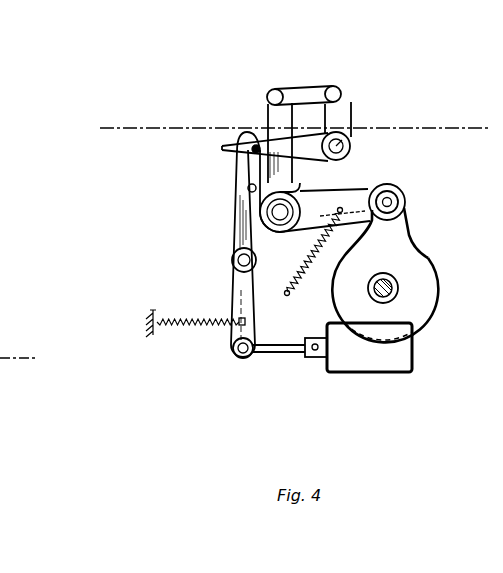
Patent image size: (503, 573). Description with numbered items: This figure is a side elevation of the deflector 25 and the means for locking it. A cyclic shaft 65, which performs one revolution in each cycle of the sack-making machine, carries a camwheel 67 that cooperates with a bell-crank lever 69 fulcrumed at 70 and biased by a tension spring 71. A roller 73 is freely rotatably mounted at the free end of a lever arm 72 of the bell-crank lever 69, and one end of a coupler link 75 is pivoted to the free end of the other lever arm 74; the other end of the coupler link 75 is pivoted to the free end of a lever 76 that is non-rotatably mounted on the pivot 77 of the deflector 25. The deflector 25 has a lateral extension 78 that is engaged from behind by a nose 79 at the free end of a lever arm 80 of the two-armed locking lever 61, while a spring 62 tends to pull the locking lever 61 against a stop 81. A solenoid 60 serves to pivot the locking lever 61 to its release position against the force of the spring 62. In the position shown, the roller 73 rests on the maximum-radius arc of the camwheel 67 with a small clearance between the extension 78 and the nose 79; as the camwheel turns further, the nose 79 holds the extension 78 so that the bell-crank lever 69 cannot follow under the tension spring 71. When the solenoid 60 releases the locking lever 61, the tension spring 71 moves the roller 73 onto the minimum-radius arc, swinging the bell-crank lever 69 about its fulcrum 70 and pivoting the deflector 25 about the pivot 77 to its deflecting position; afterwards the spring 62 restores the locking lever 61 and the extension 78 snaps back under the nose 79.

The deflector 25 is at (312, 145).
The solenoid 60 is at (387, 357).
The locking lever 61 is at (237, 289).
The spring 62 is at (202, 326).
The cyclic shaft 65 is at (395, 280).
The camwheel 67 is at (420, 305).
The bell-crank lever 69 is at (333, 196).
The fulcrum 70 is at (280, 206).
The tension spring 71 is at (295, 295).
The lever arm 72 is at (390, 192).
The roller 73 is at (403, 200).
The lever arm 74 is at (272, 115).
The coupler link 75 is at (298, 95).
The lever 76 is at (340, 120).
The pivot 77 is at (353, 132).
The lateral extension 78 is at (260, 143).
The nose 79 is at (243, 137).
The lever arm 80 is at (238, 210).
The stop 81 is at (248, 187).